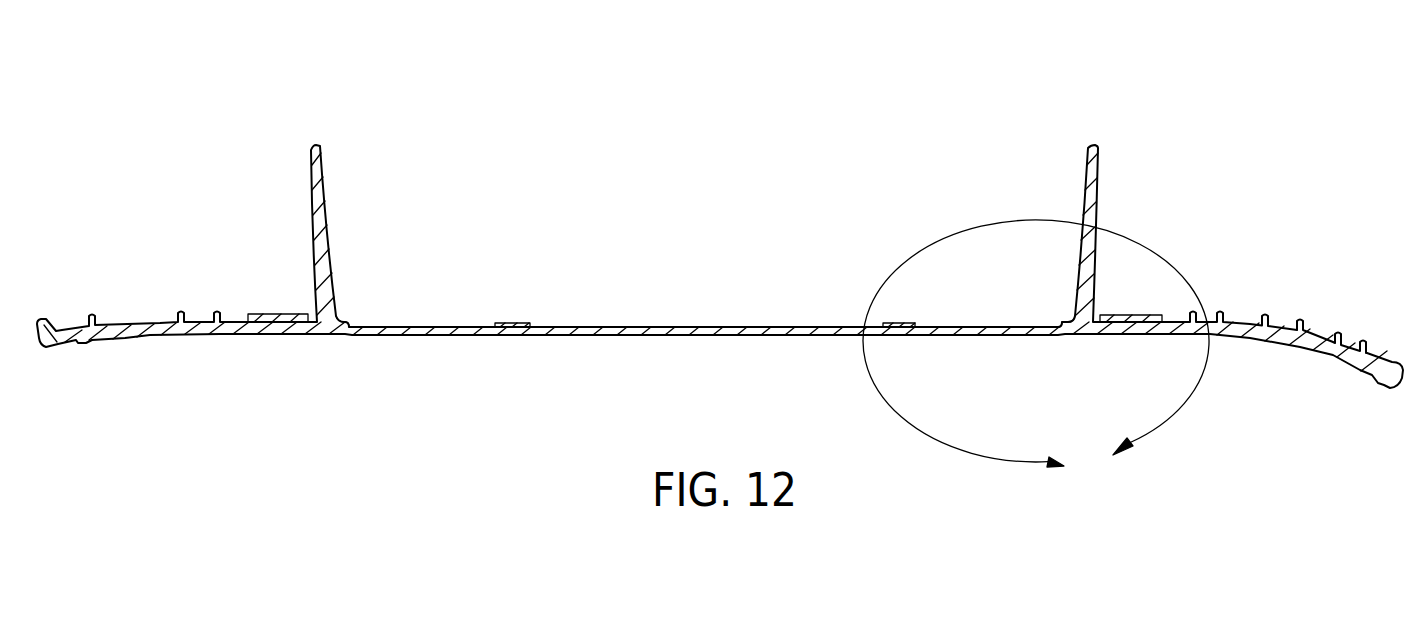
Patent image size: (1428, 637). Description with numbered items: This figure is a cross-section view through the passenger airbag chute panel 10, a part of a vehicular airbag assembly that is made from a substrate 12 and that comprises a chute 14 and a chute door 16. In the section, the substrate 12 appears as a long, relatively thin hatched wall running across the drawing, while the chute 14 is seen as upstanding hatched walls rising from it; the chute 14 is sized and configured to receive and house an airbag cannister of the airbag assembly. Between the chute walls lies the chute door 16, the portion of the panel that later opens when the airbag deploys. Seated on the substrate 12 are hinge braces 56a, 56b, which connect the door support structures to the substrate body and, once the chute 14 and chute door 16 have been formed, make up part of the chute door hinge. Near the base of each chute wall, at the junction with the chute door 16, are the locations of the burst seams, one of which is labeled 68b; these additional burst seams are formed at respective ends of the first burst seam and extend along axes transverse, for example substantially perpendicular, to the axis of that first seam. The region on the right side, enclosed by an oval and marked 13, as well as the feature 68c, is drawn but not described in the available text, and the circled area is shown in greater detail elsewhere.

The passenger airbag chute panel 10 is at (253, 155).
The substrate 12 is at (140, 323).
The detail region 13 is at (1036, 351).
The chute 14 is at (1100, 178).
The chute door 16 is at (706, 335).
The hinge brace 56a is at (513, 323).
The hinge brace 56b is at (900, 323).
The burst seam 68b is at (346, 332).
The step 68c is at (1057, 332).